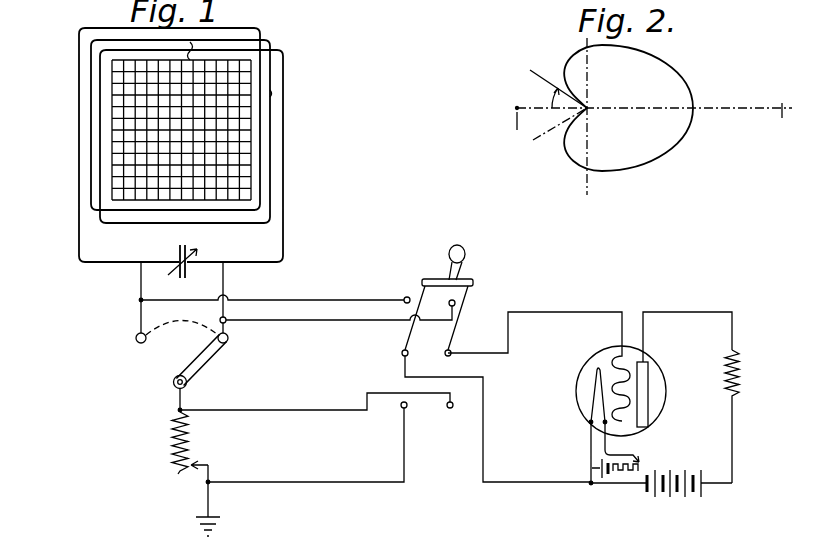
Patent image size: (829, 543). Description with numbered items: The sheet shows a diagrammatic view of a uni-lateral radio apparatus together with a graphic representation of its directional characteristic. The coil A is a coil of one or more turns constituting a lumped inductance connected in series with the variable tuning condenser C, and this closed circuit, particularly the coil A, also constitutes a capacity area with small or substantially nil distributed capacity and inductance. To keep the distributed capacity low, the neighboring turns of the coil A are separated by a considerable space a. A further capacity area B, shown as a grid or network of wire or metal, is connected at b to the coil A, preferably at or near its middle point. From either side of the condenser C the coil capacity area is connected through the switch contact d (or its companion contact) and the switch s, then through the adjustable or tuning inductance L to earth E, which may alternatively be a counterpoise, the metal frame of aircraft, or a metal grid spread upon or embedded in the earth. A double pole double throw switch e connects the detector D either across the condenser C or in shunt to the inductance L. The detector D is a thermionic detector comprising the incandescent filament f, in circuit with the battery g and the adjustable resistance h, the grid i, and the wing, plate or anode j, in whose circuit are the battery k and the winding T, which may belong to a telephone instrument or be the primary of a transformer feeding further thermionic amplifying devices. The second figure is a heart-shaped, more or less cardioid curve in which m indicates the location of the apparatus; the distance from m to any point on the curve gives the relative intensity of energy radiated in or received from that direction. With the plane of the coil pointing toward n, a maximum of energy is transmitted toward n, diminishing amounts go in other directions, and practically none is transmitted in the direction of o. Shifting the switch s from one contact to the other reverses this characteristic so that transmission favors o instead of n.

In FIG. 1, the coil A is at (79, 131).
In FIG. 1, the space between turns a is at (276, 96).
In FIG. 1, the connection point b is at (191, 42).
In FIG. 1, the capacity area B is at (251, 167).
In FIG. 1, the variable tuning condenser C is at (178, 251).
In FIG. 1, the double pole double throw switch e is at (497, 265).
In FIG. 1, the switch contact d is at (229, 338).
In FIG. 1, the switch s is at (199, 369).
In FIG. 1, the adjustable tuning inductance L is at (170, 437).
In FIG. 1, the earth E is at (230, 522).
In FIG. 1, the detector D is at (653, 355).
In FIG. 1, the grid i is at (624, 355).
In FIG. 1, the plate j is at (641, 403).
In FIG. 1, the incandescent filament f is at (593, 402).
In FIG. 1, the battery g is at (591, 462).
In FIG. 1, the adjustable resistance h is at (641, 460).
In FIG. 1, the battery k is at (688, 502).
In FIG. 2, the battery k is at (552, 108).
In FIG. 1, the winding T is at (738, 380).
In FIG. 2, the location of apparatus m is at (592, 104).
In FIG. 2, the direction of maximum transmission n is at (776, 125).
In FIG. 2, the direction of minimum transmission o is at (513, 131).